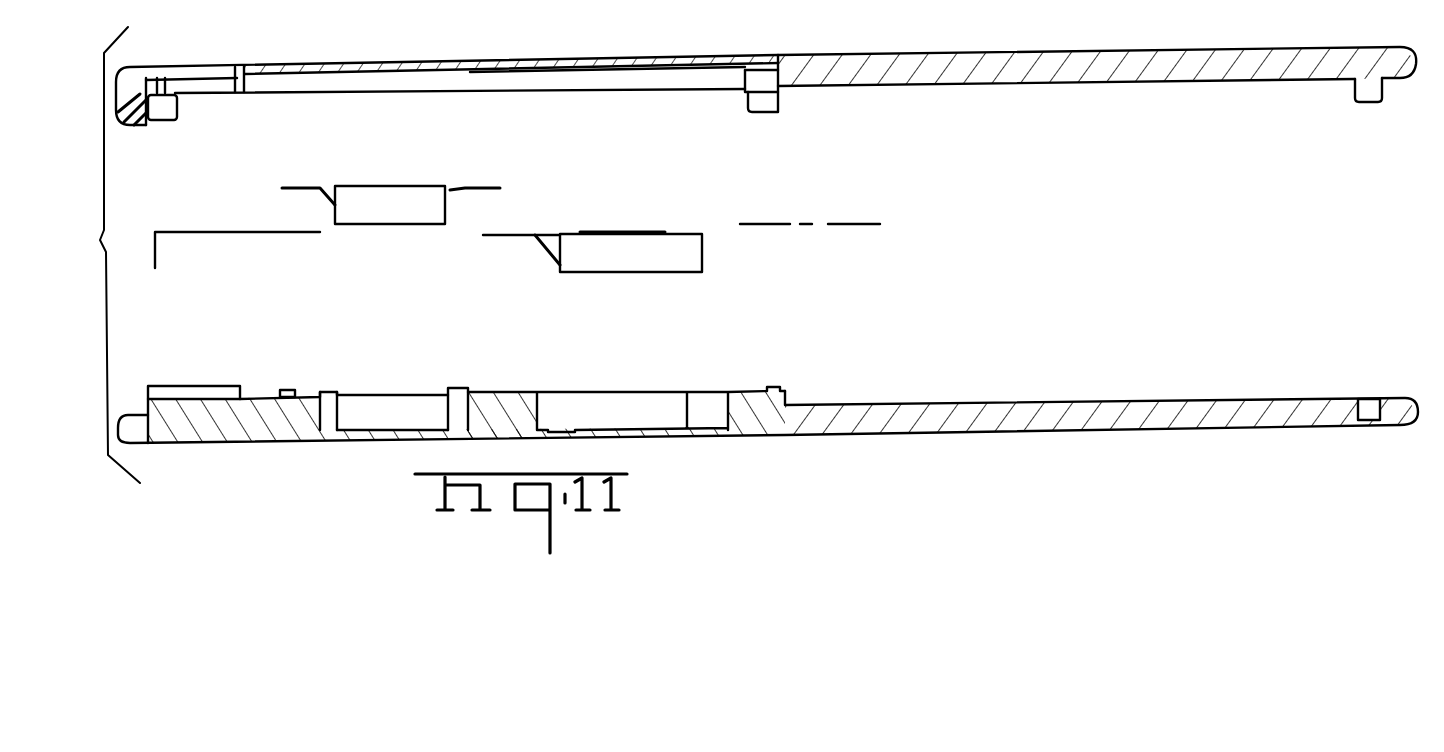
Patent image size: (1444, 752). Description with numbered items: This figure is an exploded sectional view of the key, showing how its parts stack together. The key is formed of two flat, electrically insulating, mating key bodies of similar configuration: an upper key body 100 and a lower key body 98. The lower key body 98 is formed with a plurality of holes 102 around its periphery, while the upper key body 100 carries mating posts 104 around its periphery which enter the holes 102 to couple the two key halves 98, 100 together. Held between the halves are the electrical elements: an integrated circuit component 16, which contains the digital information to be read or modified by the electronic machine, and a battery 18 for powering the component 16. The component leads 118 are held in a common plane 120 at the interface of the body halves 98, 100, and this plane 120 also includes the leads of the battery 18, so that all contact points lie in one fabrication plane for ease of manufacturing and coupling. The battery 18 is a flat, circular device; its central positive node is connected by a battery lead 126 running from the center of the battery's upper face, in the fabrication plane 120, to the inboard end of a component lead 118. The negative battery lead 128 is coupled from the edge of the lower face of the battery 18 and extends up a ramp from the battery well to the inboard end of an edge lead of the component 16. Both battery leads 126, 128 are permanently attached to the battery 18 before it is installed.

The integrated circuit component 16 is at (385, 212).
The battery 18 is at (628, 264).
The lower key body 98 is at (1070, 405).
The upper key body 100 is at (1028, 72).
The holes 102 is at (1368, 400).
The mating posts 104 is at (1368, 93).
The component leads 118 is at (312, 185).
The common plane 120 is at (838, 188).
The battery lead 126 is at (545, 236).
The negative battery lead 128 is at (545, 255).